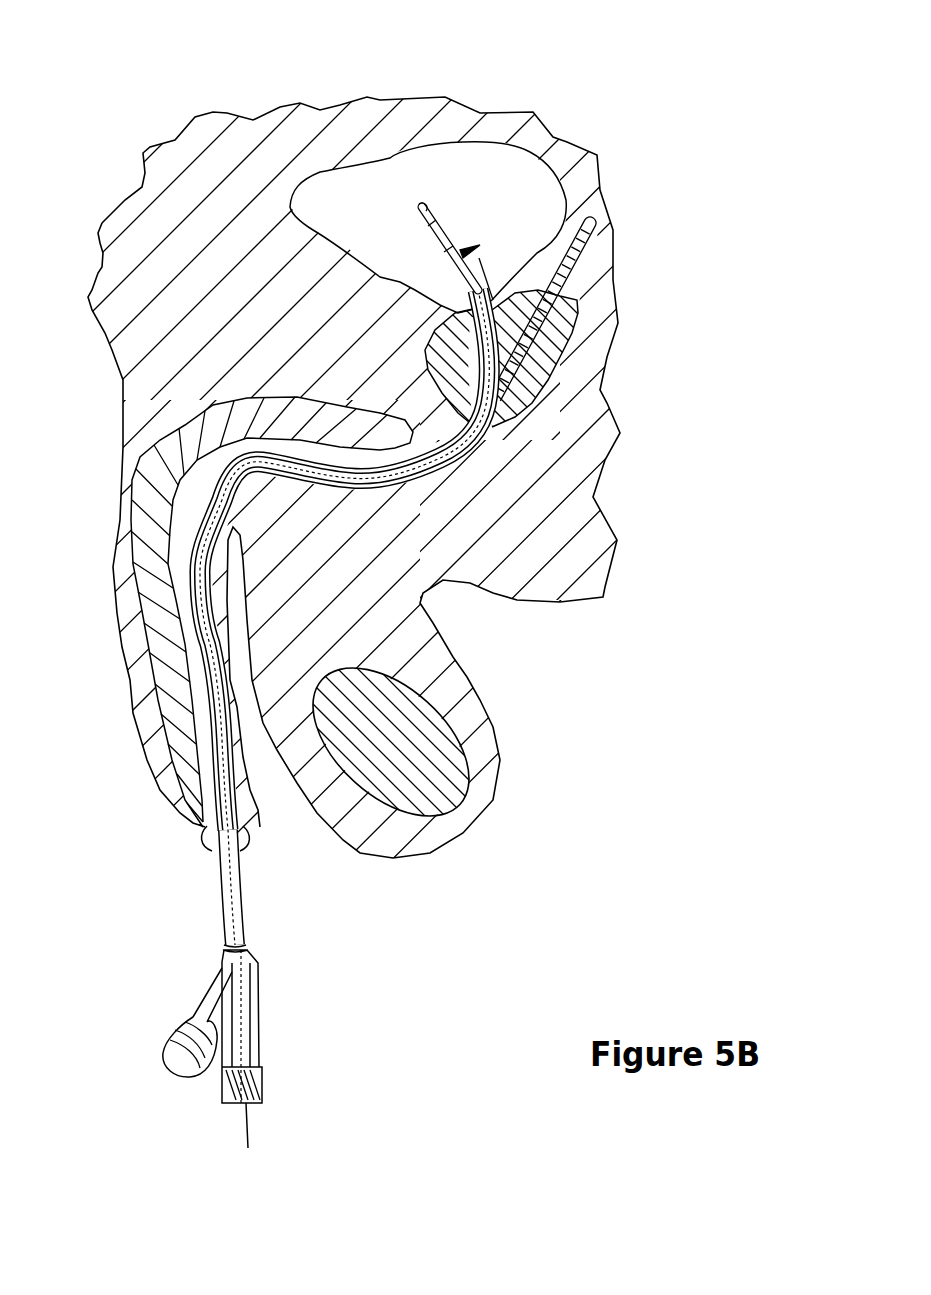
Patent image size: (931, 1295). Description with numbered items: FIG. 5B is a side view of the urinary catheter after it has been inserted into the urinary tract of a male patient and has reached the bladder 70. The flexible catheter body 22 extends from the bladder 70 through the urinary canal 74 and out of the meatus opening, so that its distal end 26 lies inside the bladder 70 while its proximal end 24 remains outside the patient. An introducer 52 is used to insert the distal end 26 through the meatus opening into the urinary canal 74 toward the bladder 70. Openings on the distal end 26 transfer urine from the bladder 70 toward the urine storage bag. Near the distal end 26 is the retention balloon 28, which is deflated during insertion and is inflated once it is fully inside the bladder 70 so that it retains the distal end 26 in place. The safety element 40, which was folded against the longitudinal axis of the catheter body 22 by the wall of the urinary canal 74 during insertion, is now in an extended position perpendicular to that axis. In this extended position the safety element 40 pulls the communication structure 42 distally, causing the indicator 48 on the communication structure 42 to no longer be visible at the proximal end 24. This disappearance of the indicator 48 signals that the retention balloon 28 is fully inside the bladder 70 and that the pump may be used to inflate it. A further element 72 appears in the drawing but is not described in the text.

The catheter body 22 is at (300, 470).
The proximal end 24 is at (183, 975).
The distal end 26 is at (413, 198).
The retention balloon 28 is at (445, 243).
The safety element 40 is at (490, 243).
The communication structure 42 is at (480, 262).
The indicator 48 is at (247, 1090).
The introducer 52 is at (207, 840).
The bladder 70 is at (540, 182).
The urethra 72 is at (480, 450).
The urinary canal 74 is at (523, 357).